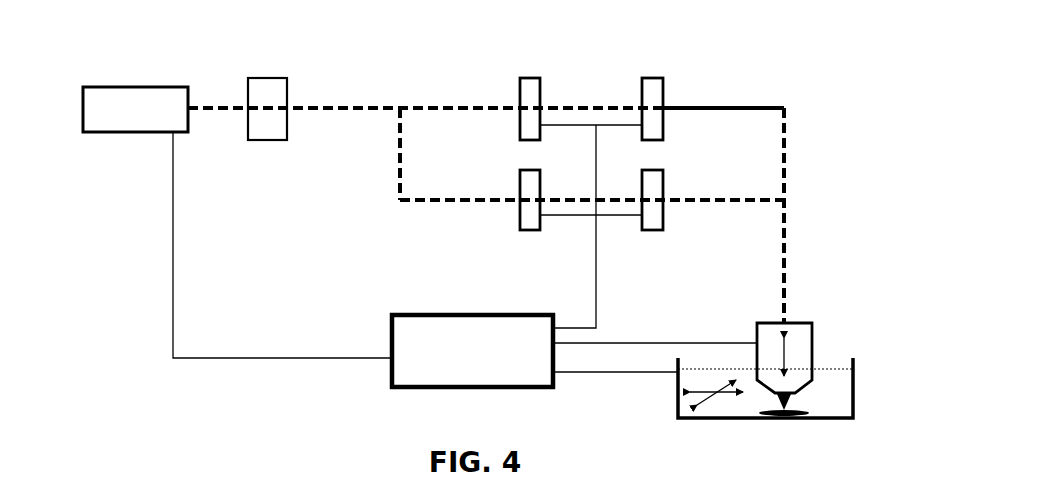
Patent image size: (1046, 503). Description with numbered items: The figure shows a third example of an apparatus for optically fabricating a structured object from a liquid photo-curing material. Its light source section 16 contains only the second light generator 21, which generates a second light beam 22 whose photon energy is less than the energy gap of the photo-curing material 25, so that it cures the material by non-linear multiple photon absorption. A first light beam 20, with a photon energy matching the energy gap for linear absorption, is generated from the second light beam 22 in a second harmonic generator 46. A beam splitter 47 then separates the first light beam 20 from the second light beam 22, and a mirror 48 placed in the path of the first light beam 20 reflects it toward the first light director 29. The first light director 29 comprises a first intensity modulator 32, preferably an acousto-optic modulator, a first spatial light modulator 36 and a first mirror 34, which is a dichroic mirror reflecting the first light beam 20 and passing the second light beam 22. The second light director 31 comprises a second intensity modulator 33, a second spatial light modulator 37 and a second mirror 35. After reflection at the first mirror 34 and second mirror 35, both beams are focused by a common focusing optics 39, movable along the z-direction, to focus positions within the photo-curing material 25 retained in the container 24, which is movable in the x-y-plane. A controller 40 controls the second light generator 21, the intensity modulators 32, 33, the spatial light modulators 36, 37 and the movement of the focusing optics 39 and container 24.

The light source section 16 is at (217, 90).
The first light beam 20 is at (700, 203).
The second light generator 21 is at (135, 109).
The second light beam 22 is at (712, 105).
The container 24 is at (826, 418).
The photo-curing material 25 is at (755, 405).
The first light director 29 is at (809, 185).
The second light director 31 is at (809, 95).
The first intensity modulator 32 is at (520, 225).
The second intensity modulator 33 is at (522, 90).
The first mirror 34 is at (802, 222).
The second mirror 35 is at (770, 85).
The first spatial light modulator 36 is at (642, 225).
The second spatial light modulator 37 is at (642, 90).
The common focusing optics 39 is at (800, 333).
The controller 40 is at (472, 351).
The second harmonic generator 46 is at (268, 78).
The beam splitter 47 is at (393, 91).
The mirror 48 is at (398, 213).